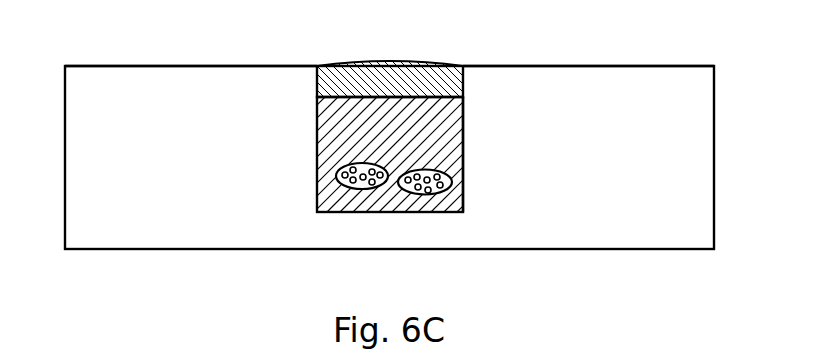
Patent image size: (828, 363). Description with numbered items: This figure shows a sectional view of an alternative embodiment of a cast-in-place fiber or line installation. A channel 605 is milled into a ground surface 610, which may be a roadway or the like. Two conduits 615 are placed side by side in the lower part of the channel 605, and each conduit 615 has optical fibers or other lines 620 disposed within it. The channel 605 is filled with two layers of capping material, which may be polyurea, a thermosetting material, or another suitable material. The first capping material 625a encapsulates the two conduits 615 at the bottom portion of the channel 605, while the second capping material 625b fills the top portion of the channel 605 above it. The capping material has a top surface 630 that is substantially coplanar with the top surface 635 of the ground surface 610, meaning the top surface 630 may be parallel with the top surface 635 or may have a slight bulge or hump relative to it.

The channel 605 is at (463, 152).
The ground surface 610 is at (205, 169).
The conduits 615 is at (386, 231).
The optical fibers 620 is at (385, 257).
The first capping material 625a is at (410, 148).
The second capping material 625b is at (410, 88).
The top surface of capping material 630 is at (385, 61).
The top surface of ground surface 635 is at (167, 66).